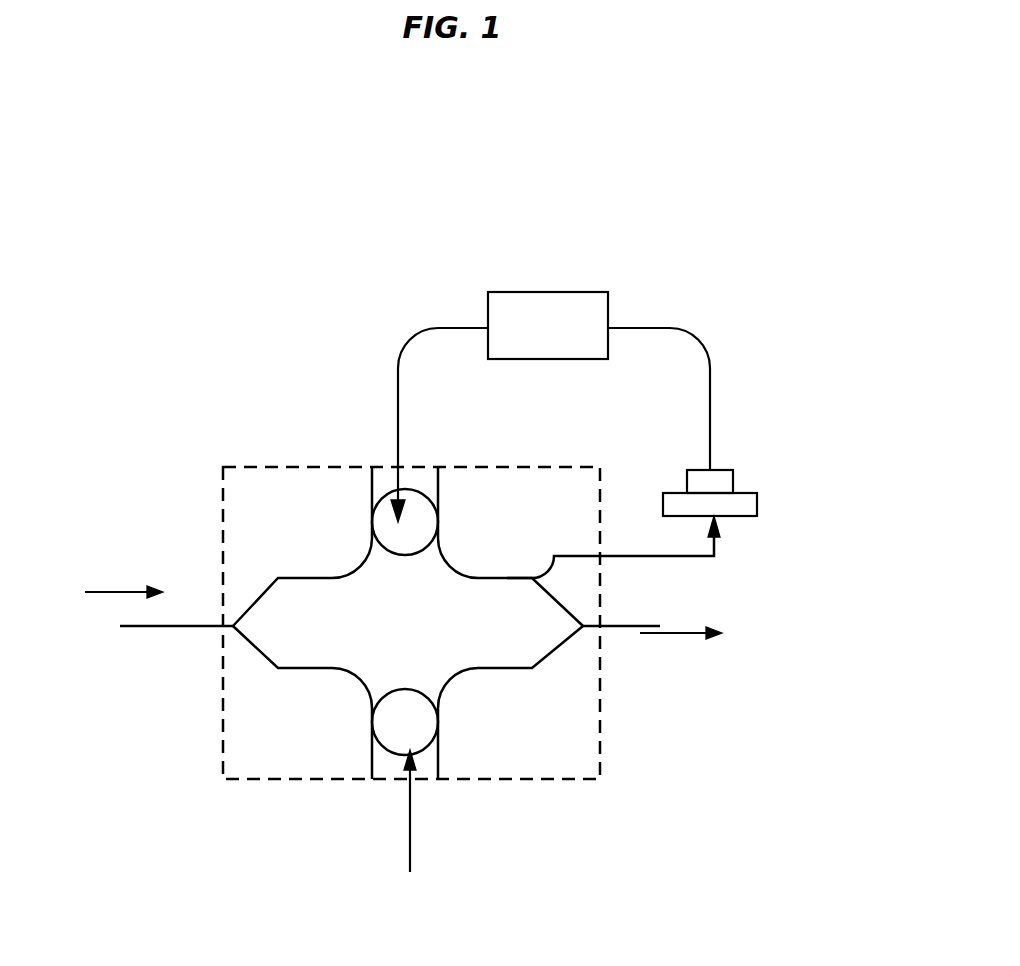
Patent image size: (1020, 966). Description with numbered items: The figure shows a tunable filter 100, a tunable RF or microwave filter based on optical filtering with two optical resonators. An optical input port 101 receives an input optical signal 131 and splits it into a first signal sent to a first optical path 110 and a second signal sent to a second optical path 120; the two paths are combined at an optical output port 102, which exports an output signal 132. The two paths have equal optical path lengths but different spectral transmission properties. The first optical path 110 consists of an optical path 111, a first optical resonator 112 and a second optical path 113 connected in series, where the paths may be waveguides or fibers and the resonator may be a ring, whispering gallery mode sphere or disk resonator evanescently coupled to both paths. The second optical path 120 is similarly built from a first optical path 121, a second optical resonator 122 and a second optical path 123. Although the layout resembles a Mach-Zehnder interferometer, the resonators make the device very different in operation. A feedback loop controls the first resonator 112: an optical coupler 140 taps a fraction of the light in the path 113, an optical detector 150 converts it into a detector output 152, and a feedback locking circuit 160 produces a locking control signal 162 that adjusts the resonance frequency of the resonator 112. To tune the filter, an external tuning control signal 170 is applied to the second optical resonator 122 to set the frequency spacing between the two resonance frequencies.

The tunable filter 100 is at (254, 228).
The optical input port 101 is at (228, 638).
The optical output port 102 is at (585, 640).
The first optical path 110 is at (408, 546).
The optical path 111 is at (320, 578).
The first optical resonator 112 is at (407, 556).
The second optical path 113 is at (462, 565).
The second optical path 120 is at (408, 737).
The first optical path 121 is at (320, 668).
The second optical resonator 122 is at (386, 757).
The second optical path 123 is at (467, 670).
The input optical signal 131 is at (120, 590).
The output signal 132 is at (697, 628).
The optical coupler 140 is at (515, 582).
The optical detector 150 is at (733, 483).
The detector output 152 is at (685, 328).
The feedback locking circuit 160 is at (550, 292).
The locking control signal 162 is at (397, 397).
The tuning control signal 170 is at (410, 818).